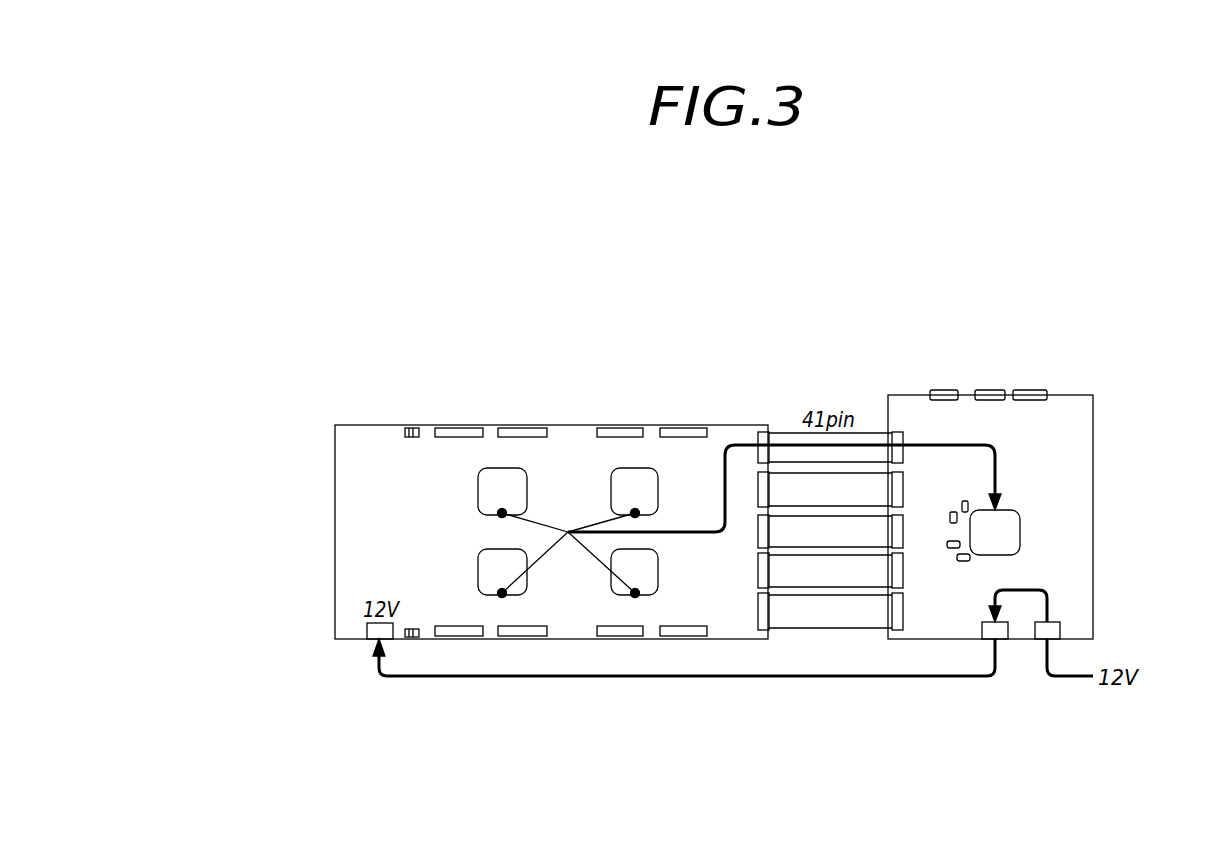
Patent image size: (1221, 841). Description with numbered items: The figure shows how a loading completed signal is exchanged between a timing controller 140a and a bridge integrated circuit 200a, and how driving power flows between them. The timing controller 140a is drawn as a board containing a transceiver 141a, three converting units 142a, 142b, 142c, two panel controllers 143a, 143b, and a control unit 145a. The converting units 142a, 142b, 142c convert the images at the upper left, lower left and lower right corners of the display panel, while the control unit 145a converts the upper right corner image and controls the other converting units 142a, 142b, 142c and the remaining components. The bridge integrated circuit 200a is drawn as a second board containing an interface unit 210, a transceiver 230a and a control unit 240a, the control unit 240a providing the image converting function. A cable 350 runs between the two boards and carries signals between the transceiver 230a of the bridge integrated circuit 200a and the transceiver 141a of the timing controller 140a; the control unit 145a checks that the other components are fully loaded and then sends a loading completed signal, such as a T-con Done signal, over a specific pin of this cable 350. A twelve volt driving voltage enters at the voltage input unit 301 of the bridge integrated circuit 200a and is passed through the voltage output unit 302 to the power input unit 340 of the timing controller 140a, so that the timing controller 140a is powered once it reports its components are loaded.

The timing controller 140a is at (362, 435).
The converting unit 142a is at (493, 475).
The converting unit 142b is at (488, 582).
The converting unit 142c is at (622, 588).
The control unit 145a is at (645, 475).
The panel controller 143a is at (697, 430).
The panel controller 143b is at (447, 632).
The transceiver 141a is at (763, 627).
The cable 350 is at (815, 618).
The transceiver 230a is at (895, 623).
The bridge integrated circuit 200a is at (1077, 445).
The interface unit 210 is at (1030, 390).
The control unit 240a is at (1015, 533).
The power input unit 340 is at (372, 630).
The voltage output unit 302 is at (988, 632).
The voltage input unit 301 is at (1038, 632).